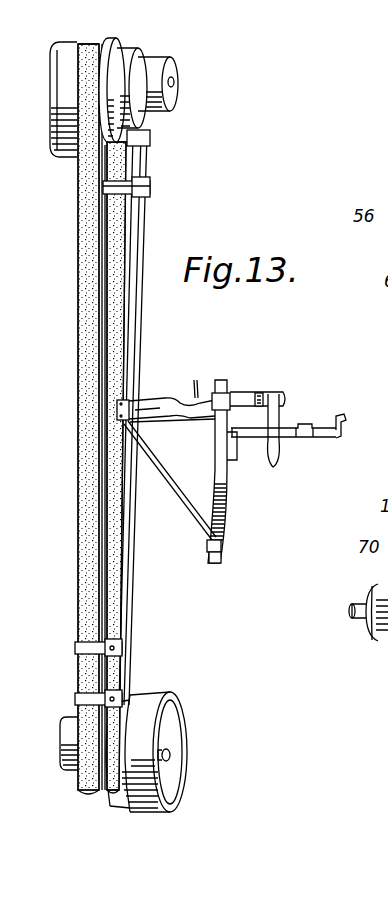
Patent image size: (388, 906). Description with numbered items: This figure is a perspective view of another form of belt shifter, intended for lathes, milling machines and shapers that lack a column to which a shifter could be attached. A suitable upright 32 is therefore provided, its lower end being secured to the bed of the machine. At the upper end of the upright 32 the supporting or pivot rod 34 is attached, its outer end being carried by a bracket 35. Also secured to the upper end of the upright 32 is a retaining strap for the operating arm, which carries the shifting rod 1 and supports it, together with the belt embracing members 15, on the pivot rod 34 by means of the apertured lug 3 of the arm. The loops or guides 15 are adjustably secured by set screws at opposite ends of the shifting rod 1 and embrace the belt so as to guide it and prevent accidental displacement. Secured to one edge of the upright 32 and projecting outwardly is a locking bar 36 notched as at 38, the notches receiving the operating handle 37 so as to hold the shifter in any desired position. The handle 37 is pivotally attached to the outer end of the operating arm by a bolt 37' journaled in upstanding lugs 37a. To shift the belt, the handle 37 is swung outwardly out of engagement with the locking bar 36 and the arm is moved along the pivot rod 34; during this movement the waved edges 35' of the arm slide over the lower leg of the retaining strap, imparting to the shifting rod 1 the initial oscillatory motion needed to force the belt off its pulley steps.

The shifting rod 1 is at (118, 592).
The loops or guides 15 is at (152, 140).
The apertured lug 3 is at (137, 421).
The supporting or pivot rod 34 is at (173, 421).
The waved edges 35' is at (193, 381).
The upright 32 is at (232, 500).
The bolt 37' is at (284, 391).
The upstanding lugs 37a is at (263, 398).
The operating handle 37 is at (293, 444).
The notches 38 is at (334, 424).
The locking bar 36 is at (344, 428).
The bracket 35 is at (172, 492).